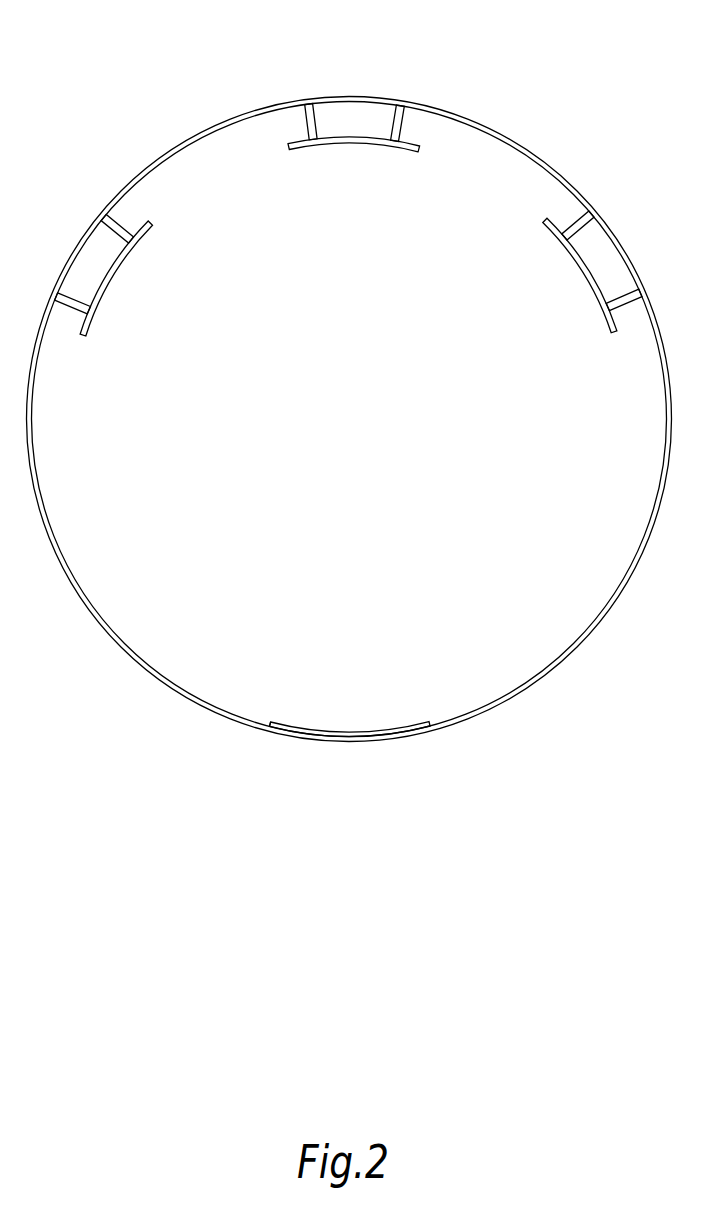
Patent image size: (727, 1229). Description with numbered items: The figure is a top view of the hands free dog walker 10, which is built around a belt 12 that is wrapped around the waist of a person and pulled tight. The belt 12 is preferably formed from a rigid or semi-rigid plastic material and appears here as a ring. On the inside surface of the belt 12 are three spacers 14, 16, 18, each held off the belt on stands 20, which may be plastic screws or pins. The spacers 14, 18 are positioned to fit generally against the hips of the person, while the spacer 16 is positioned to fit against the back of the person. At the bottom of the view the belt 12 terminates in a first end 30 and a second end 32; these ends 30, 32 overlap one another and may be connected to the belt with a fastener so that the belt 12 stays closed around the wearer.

The hands free dog walker 10 is at (473, 65).
The belt 12 is at (515, 689).
The spacer 14 is at (113, 277).
The spacer 16 is at (351, 145).
The spacer 18 is at (584, 273).
The stand 20 is at (305, 121).
The first end 30 is at (432, 727).
The second end 32 is at (270, 724).